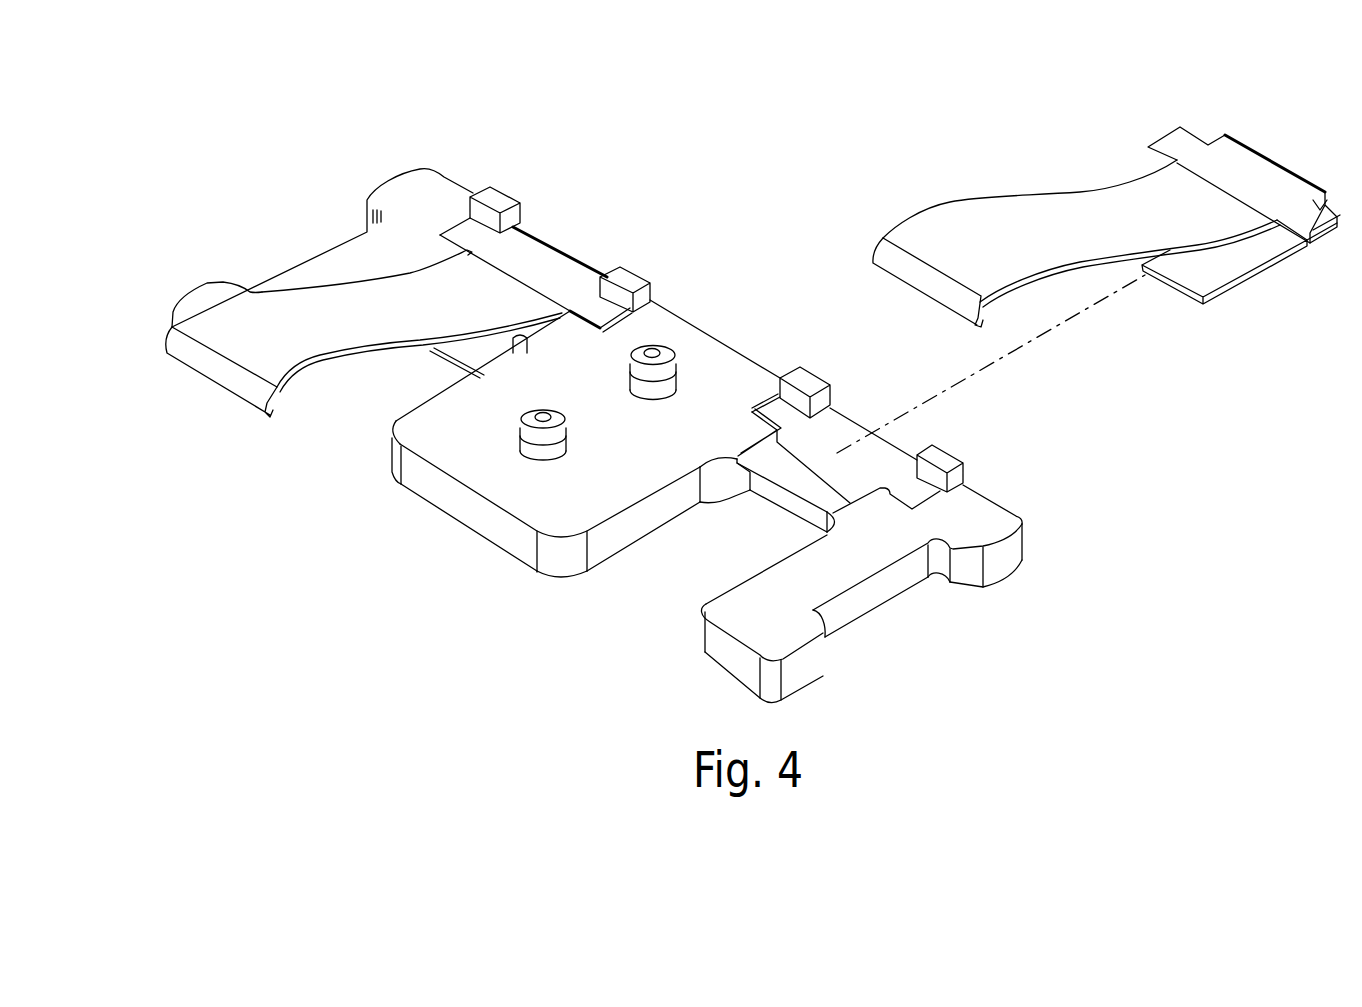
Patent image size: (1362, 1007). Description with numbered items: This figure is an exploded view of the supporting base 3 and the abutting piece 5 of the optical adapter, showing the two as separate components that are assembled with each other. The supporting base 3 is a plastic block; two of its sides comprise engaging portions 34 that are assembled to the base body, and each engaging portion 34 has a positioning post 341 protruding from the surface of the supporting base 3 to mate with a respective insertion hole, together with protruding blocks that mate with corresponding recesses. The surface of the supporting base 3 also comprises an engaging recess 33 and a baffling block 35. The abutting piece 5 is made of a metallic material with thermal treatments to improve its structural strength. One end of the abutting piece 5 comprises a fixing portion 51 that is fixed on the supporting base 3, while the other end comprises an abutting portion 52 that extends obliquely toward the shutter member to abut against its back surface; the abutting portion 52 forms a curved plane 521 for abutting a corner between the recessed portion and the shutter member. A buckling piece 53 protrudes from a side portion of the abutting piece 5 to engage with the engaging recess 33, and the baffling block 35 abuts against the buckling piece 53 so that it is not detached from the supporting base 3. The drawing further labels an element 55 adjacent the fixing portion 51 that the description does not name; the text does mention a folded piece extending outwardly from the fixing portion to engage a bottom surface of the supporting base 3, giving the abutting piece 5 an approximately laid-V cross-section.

The supporting base 3 is at (709, 442).
The engaging recess 33 is at (877, 465).
The engaging portions 34 is at (667, 352).
The positioning post 341 is at (533, 428).
The baffling block 35 is at (623, 277).
The abutting piece 5 is at (723, 260).
The fixing portion 51 is at (1227, 180).
The abutting portion 52 is at (172, 347).
The curved plane 521 is at (213, 372).
The buckling piece 53 is at (1315, 228).
The support plate 55 is at (1218, 280).